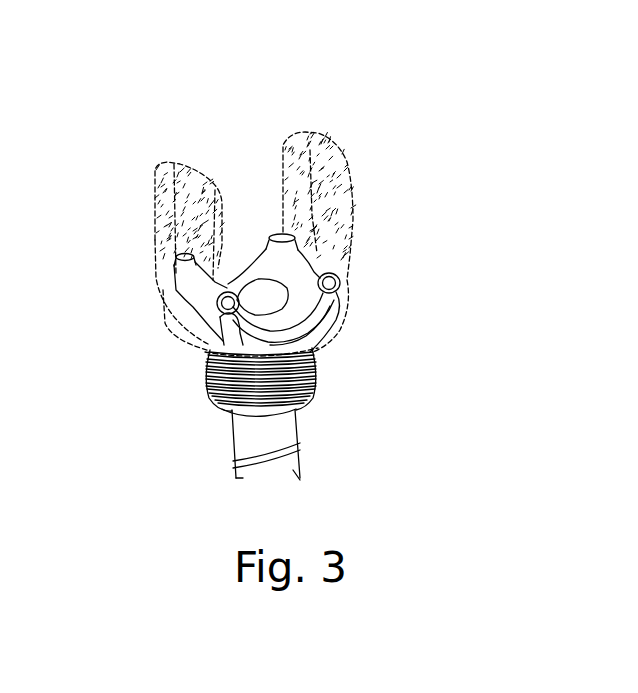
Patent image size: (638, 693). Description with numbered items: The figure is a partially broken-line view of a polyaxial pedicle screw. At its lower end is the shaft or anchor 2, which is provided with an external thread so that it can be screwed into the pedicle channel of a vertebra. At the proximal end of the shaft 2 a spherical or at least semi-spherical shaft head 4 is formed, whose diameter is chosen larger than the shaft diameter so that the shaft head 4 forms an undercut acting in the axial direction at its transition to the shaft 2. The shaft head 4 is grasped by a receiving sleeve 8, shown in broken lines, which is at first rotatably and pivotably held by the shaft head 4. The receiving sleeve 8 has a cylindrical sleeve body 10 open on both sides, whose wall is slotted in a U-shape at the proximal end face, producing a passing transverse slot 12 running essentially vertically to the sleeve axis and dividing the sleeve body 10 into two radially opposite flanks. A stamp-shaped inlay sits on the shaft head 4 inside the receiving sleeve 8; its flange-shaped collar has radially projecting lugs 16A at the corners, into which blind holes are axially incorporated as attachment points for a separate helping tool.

The U-shaped slot 12 is at (238, 124).
The cylindrical sleeve body 10 is at (355, 212).
The receiving sleeve 8 is at (345, 286).
The radially projecting lugs 16A is at (176, 258).
The shaft head 4 is at (314, 365).
The shaft or anchor 2 is at (300, 460).